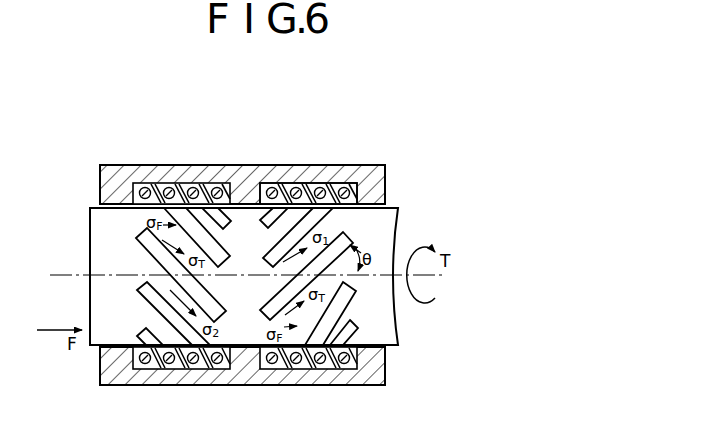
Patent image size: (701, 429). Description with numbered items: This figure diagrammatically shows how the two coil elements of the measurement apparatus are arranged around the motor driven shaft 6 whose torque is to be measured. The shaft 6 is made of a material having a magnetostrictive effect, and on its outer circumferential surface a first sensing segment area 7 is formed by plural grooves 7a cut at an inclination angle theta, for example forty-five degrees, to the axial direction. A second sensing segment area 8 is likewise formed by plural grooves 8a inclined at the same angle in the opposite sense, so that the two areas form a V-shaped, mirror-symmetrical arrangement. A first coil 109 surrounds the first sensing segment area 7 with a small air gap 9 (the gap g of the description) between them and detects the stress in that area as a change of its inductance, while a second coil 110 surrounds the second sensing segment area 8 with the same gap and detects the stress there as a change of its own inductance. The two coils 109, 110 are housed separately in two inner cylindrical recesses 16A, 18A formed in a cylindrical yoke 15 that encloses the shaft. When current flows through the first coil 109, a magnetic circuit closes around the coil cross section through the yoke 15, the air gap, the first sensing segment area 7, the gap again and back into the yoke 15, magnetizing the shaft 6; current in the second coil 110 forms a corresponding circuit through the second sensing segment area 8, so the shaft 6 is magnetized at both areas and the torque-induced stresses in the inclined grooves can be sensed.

The motor driven shaft 6 is at (393, 338).
The first sensing segment area 7 is at (337, 223).
The grooves 7a is at (352, 242).
The second sensing segment area 8 is at (147, 222).
The grooves 8a is at (140, 235).
The bearing 9 is at (387, 203).
The cylindrical yoke 15 is at (386, 176).
The first coil 109 is at (323, 188).
The second coil 110 is at (145, 189).
The inner cylindrical recess 16A is at (335, 368).
The inner cylindrical recess 18A is at (211, 368).